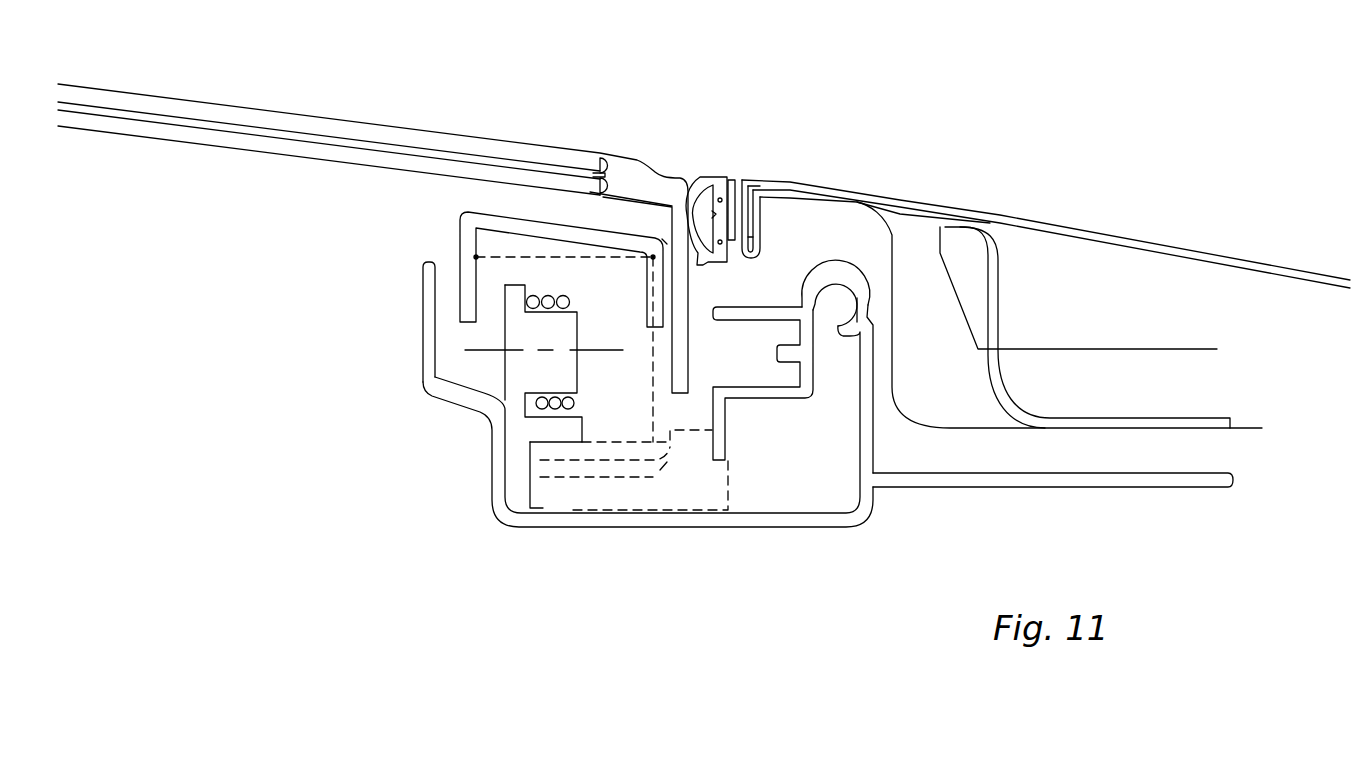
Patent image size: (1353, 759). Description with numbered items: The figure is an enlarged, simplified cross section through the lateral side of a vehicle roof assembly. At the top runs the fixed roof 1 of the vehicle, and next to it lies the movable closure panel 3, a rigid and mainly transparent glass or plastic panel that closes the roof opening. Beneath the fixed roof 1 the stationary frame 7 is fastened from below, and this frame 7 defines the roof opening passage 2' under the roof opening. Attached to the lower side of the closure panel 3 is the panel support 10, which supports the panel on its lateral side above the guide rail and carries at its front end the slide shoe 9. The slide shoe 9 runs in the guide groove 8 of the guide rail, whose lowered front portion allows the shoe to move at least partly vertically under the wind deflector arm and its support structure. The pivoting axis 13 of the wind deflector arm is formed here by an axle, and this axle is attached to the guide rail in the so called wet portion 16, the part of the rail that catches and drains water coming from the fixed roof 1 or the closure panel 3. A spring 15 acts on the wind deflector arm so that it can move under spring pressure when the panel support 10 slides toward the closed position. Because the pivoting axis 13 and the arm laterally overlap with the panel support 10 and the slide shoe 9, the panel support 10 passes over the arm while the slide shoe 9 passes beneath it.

The fixed roof 1 is at (920, 204).
The closure panel 3 is at (297, 117).
The panel support 10 is at (550, 226).
The roof opening passage 2' is at (385, 346).
The pivoting axis 13 is at (525, 355).
The spring 15 is at (543, 409).
The guide groove 8 is at (530, 497).
The slide shoe 9 is at (613, 497).
The wet portion 16 is at (768, 502).
The frame 7 is at (948, 480).